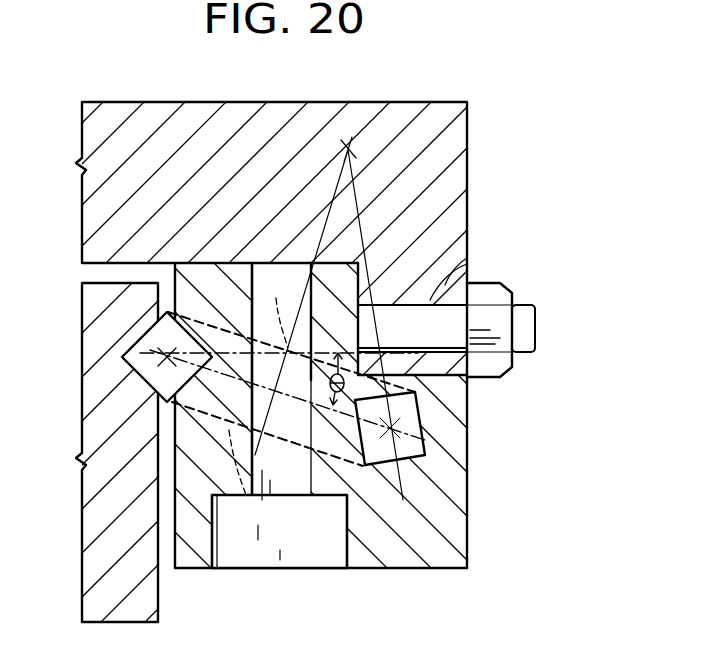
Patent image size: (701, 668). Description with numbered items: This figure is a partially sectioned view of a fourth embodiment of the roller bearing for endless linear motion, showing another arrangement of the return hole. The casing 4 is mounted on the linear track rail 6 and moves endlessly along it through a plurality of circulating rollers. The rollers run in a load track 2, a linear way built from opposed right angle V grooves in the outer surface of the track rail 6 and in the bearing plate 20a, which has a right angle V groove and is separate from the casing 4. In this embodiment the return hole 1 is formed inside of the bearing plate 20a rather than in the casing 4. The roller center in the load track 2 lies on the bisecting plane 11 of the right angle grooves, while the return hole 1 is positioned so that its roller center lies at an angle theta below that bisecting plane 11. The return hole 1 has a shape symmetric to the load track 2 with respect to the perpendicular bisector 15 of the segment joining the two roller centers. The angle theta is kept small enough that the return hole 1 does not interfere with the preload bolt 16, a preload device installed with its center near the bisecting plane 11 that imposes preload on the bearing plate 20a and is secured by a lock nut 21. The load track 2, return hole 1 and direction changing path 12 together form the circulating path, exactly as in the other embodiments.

The casing 4 is at (241, 169).
The track rail 6 is at (132, 503).
The bearing plate 20a is at (413, 553).
The bisecting plane 11 is at (270, 384).
The direction changing path 12 is at (279, 519).
The load track 2 is at (125, 356).
The return hole 1 is at (412, 413).
The perpendicular bisector 15 is at (340, 207).
The lock nut 21 is at (505, 292).
The preload bolt 16 is at (445, 268).